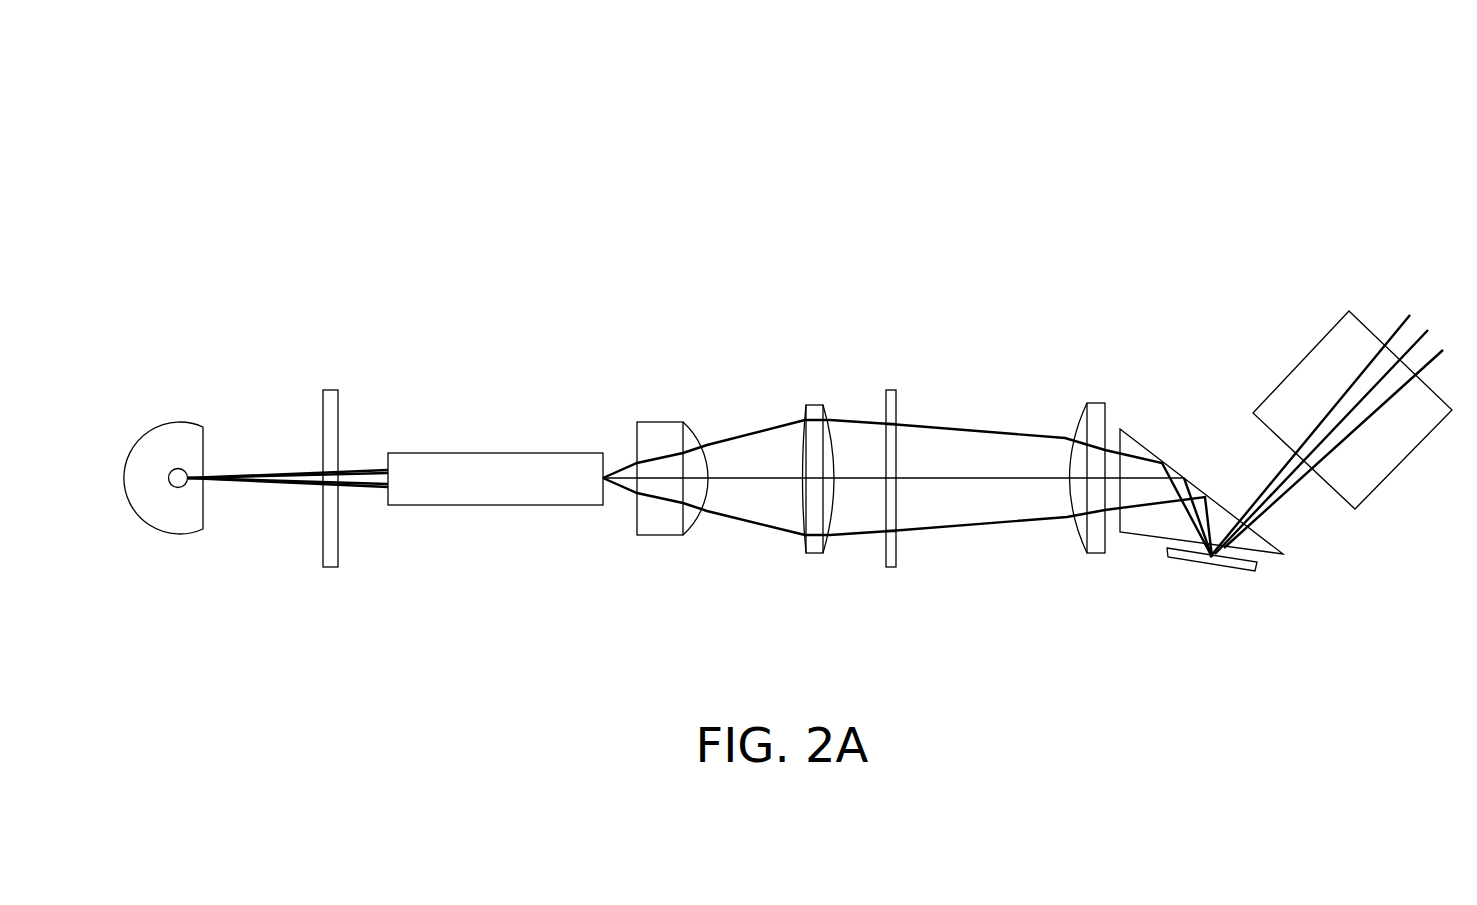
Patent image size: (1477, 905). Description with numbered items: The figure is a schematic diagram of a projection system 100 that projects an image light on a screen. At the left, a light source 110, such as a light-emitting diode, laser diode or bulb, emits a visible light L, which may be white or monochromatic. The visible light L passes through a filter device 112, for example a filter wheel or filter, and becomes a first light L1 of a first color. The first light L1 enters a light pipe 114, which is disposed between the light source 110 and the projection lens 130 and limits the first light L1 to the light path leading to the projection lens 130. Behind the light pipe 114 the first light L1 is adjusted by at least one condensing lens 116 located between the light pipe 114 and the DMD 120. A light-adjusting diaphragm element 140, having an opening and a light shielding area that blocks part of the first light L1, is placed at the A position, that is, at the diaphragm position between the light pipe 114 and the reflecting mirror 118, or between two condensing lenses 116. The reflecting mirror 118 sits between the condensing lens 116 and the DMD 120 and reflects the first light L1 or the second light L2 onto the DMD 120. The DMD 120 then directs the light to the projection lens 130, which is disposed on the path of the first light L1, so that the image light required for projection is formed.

The projection system 100 is at (101, 226).
The light source 110 is at (178, 468).
The visible light L is at (260, 472).
The filter device 112 is at (328, 390).
The light pipe 114 is at (495, 453).
The condensing lens 116 is at (1095, 403).
The first light L1 is at (740, 550).
The second light L2 is at (1000, 553).
The light-adjusting diaphragm element 140 is at (892, 567).
The A position A is at (878, 577).
The reflecting mirror 118 is at (1150, 438).
The DMD 120 is at (1237, 569).
The projection lens 130 is at (1402, 462).